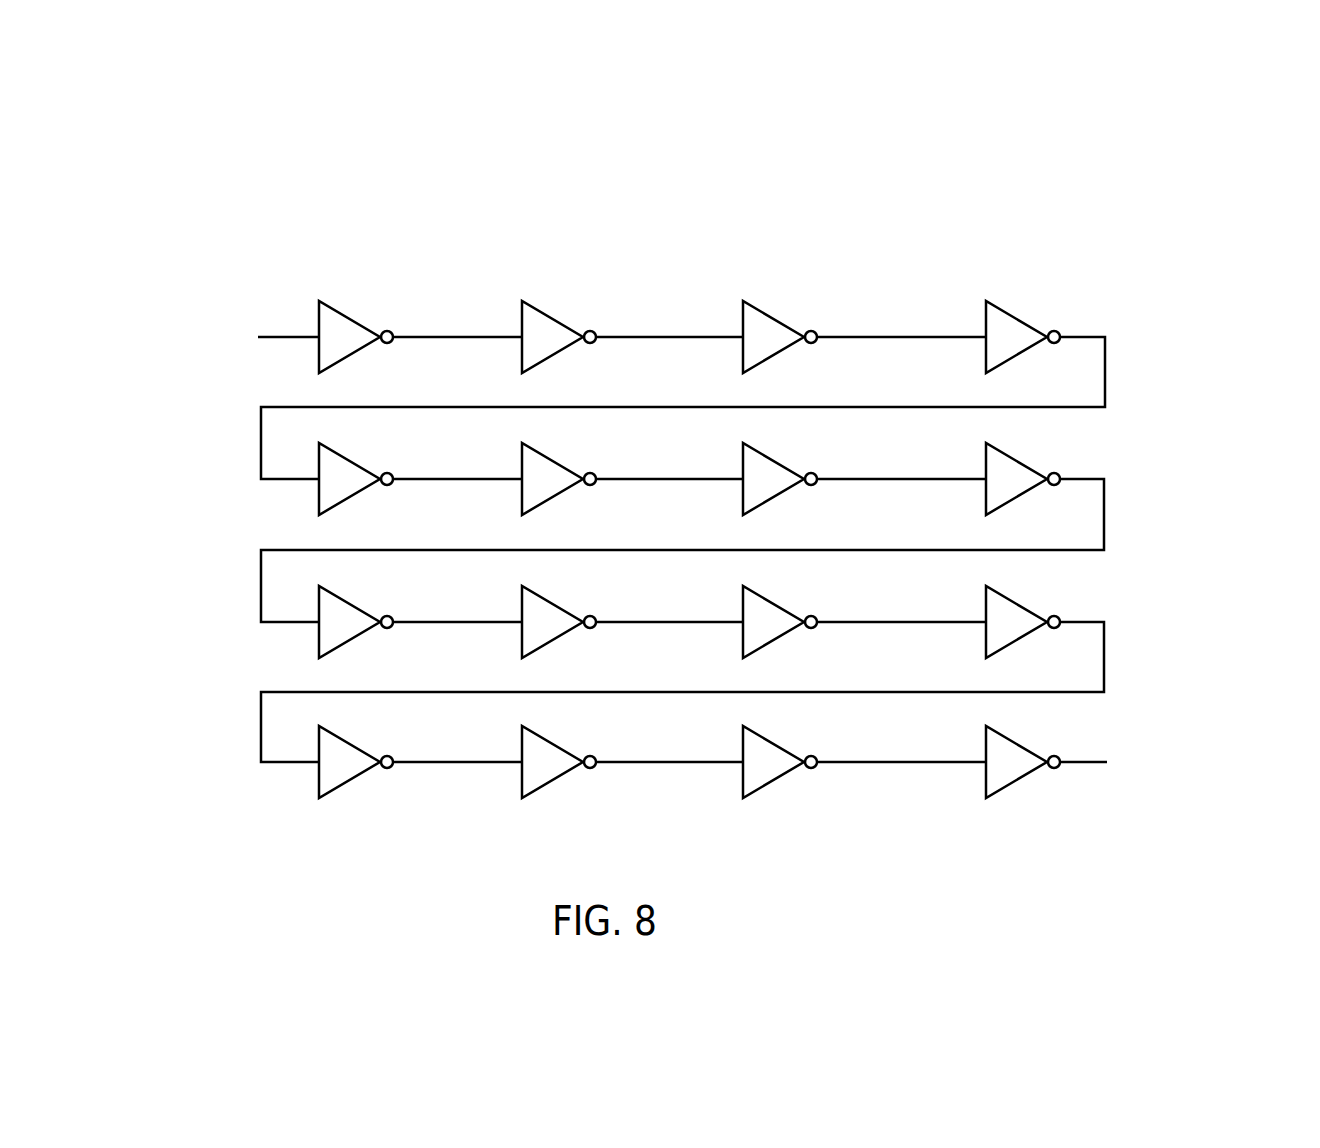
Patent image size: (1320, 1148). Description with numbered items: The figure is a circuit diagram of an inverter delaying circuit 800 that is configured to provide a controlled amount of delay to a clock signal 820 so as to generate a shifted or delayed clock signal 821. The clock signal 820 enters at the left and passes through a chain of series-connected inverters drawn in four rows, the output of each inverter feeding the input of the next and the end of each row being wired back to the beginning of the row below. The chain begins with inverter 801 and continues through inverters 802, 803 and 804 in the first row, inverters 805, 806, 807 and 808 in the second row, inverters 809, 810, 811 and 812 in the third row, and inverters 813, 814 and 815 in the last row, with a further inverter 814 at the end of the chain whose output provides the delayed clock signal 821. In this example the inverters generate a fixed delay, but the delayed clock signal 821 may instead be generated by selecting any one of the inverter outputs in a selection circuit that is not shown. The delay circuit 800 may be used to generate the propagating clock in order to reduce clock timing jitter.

The inverter delaying circuit 800 is at (505, 126).
The inverter 801 is at (356, 320).
The inverter 802 is at (558, 320).
The inverter 803 is at (779, 320).
The inverter 804 is at (1010, 314).
The inverter 805 is at (349, 461).
The inverter 806 is at (556, 463).
The inverter 807 is at (767, 457).
The inverter 808 is at (1005, 454).
The inverter 809 is at (357, 608).
The inverter 810 is at (553, 605).
The inverter 811 is at (783, 610).
The inverter 812 is at (1010, 600).
The inverter 813 is at (355, 748).
The inverter 814 is at (553, 744).
The inverter 815 is at (783, 750).
The clock signal 820 is at (260, 348).
The delayed clock signal 821 is at (1080, 769).